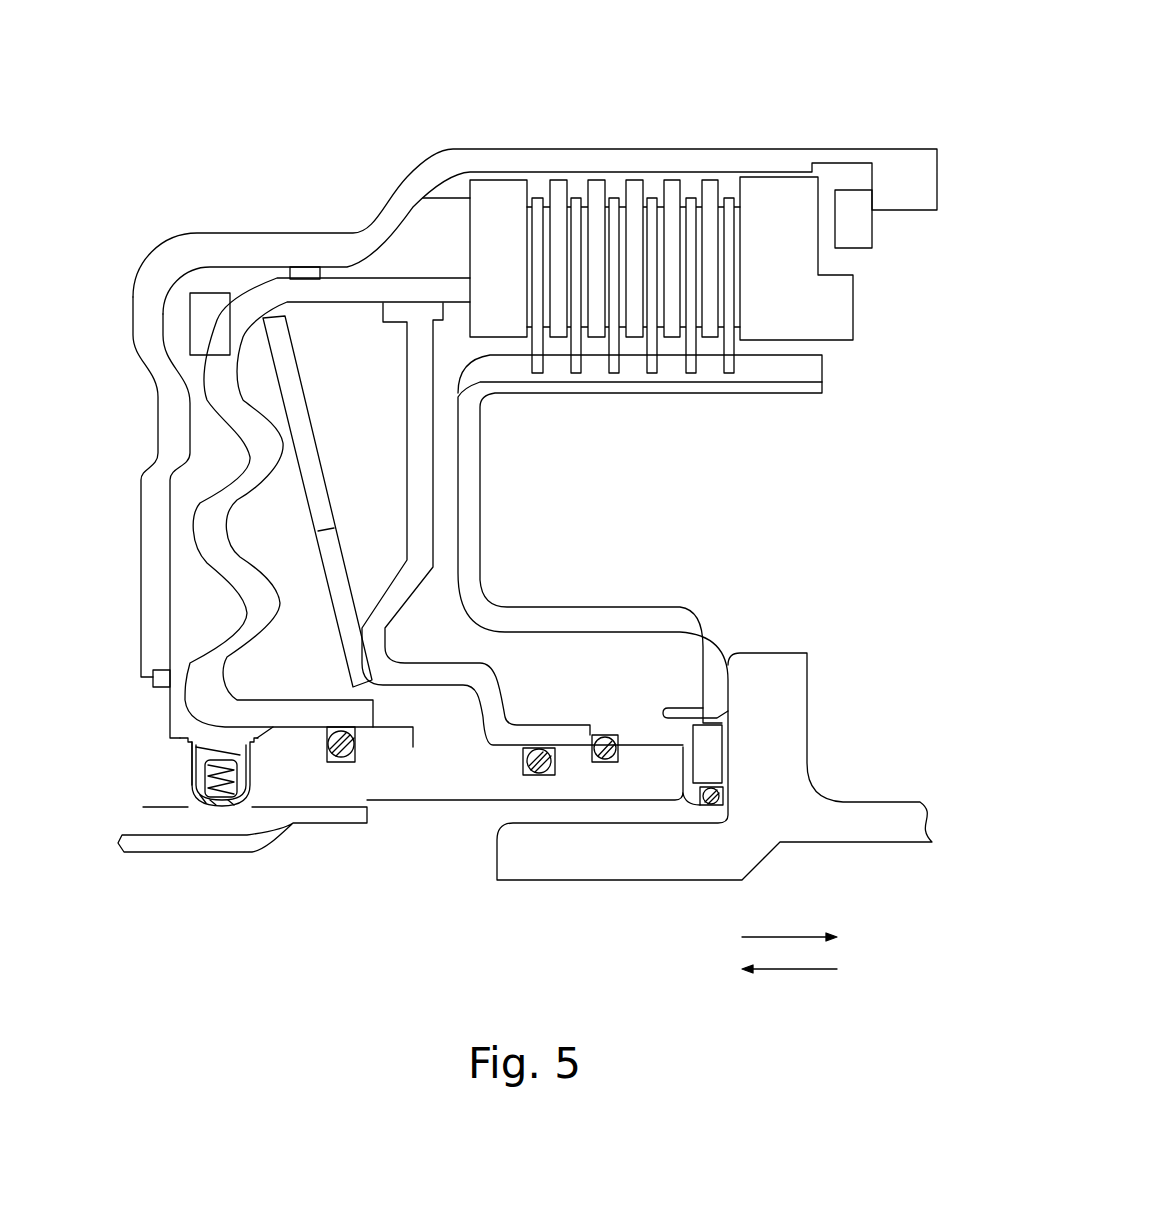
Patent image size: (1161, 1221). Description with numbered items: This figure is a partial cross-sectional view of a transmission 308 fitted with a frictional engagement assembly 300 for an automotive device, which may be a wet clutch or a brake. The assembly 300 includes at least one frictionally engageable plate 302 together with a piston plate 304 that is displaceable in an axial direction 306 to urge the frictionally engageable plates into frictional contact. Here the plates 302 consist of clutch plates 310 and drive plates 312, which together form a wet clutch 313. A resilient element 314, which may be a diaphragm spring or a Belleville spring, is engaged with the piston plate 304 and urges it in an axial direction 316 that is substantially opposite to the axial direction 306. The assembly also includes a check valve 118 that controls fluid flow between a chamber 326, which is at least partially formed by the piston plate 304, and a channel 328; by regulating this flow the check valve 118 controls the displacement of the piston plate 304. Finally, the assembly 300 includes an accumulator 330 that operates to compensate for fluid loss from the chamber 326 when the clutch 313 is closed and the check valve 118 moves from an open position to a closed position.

The check valve 118 is at (185, 768).
The frictional engagement assembly 300 is at (153, 219).
The frictionally engageable plate 302 is at (607, 94).
The piston plate 304 is at (262, 290).
The axial direction 306 is at (768, 937).
The transmission 308 is at (816, 142).
The clutch plates 310 is at (540, 195).
The drive plates 312 is at (632, 185).
The wet clutch 313 is at (415, 109).
The resilient element 314 is at (303, 425).
The axial direction 316 is at (797, 970).
The chamber 326 is at (185, 590).
The channel 328 is at (185, 822).
The accumulator 330 is at (130, 432).